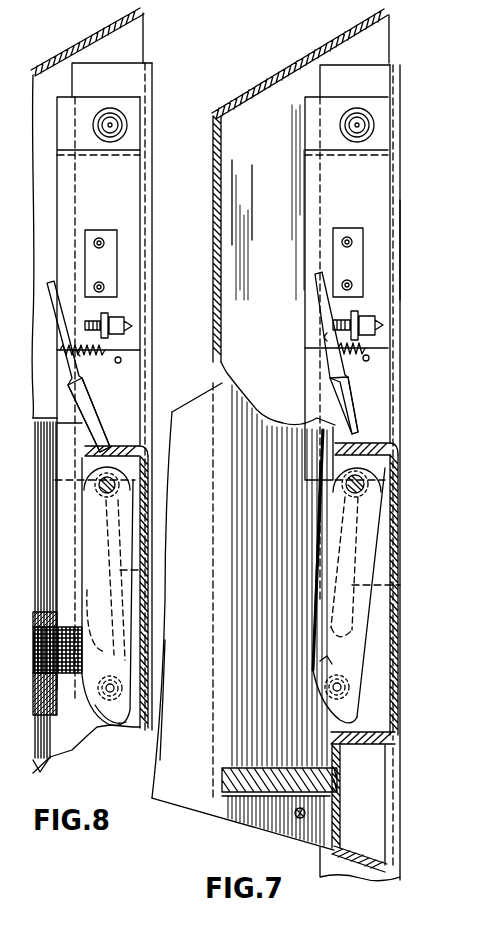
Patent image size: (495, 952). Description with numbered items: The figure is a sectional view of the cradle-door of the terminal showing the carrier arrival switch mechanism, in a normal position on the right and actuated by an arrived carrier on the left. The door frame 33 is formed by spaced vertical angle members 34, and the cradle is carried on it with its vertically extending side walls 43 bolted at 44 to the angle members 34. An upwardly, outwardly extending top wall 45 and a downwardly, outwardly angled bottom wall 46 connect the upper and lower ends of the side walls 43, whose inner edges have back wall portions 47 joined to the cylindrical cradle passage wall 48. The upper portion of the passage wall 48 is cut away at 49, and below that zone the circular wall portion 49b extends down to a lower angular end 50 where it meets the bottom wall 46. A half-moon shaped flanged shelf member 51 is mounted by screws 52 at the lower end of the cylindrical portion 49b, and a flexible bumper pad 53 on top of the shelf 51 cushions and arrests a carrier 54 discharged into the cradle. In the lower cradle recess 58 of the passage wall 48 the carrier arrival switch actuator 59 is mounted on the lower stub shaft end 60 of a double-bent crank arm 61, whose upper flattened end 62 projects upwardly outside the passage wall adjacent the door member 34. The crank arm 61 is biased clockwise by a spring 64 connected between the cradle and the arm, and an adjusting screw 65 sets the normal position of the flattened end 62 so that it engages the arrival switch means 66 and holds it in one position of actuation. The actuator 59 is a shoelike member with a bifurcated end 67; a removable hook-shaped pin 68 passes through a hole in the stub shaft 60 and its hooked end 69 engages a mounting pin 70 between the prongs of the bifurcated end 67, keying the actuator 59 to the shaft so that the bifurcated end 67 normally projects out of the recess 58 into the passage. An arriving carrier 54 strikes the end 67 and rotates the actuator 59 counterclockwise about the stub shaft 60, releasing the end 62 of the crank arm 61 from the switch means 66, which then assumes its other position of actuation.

In FIG. 7, the door frame 33 is at (401, 178).
In FIG. 8, the vertical angle members 34 is at (98, 74).
In FIG. 7, the vertical angle members 34 is at (365, 82).
In FIG. 7, the cradle side walls 43 is at (268, 176).
In FIG. 8, the bolts 44 is at (118, 118).
In FIG. 7, the bolts 44 is at (370, 124).
In FIG. 7, the top wall 45 is at (307, 58).
In FIG. 7, the bottom wall 46 is at (362, 870).
In FIG. 7, the back wall portions 47 is at (221, 227).
In FIG. 7, the cylindrical cradle passage wall 48 is at (180, 772).
In FIG. 7, the cut away zone 49 is at (205, 405).
In FIG. 7, the circular cradle passage wall portion 49b is at (208, 753).
In FIG. 7, the lower angular end 50 is at (201, 813).
In FIG. 7, the half-moon shaped flanged shelf member 51 is at (258, 789).
In FIG. 7, the screws 52 is at (306, 815).
In FIG. 7, the flexible bumper pad 53 is at (247, 767).
In FIG. 8, the carrier 54 is at (44, 752).
In FIG. 8, the lower cradle recess 58 is at (140, 583).
In FIG. 7, the lower cradle recess 58 is at (358, 742).
In FIG. 8, the carrier arrival switch actuator 59 is at (86, 603).
In FIG. 7, the carrier arrival switch actuator 59 is at (368, 667).
In FIG. 8, the lower stub shaft end 60 is at (108, 498).
In FIG. 7, the lower stub shaft end 60 is at (372, 488).
In FIG. 8, the double-bent crank arm 61 is at (84, 404).
In FIG. 7, the double-bent crank arm 61 is at (343, 404).
In FIG. 8, the flattened end 62 is at (50, 289).
In FIG. 7, the flattened end 62 is at (325, 300).
In FIG. 8, the spring 64 is at (92, 358).
In FIG. 7, the spring 64 is at (345, 358).
In FIG. 7, the adjusting screw 65 is at (380, 320).
In FIG. 8, the arrival switch means 66 is at (103, 258).
In FIG. 7, the arrival switch means 66 is at (350, 258).
In FIG. 8, the bifurcated end 67 is at (123, 716).
In FIG. 7, the bifurcated end 67 is at (347, 712).
In FIG. 7, the hook-shaped pin 68 is at (400, 583).
In FIG. 7, the hooked end 69 is at (320, 666).
In FIG. 8, the mounting pin 70 is at (109, 693).
In FIG. 7, the mounting pin 70 is at (333, 687).